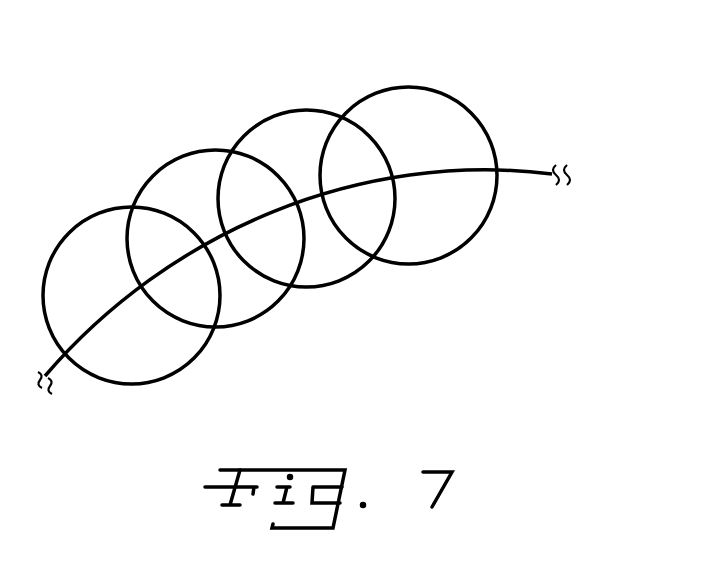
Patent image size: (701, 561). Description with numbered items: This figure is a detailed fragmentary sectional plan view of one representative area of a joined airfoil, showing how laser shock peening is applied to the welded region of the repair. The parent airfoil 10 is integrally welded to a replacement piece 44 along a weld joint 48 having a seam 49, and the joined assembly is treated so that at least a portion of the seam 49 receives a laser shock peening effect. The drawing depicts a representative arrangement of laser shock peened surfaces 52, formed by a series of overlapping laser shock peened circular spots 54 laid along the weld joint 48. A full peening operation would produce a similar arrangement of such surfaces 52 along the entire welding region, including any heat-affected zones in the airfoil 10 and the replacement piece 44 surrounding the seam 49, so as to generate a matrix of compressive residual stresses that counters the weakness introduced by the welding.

The airfoil 10 is at (317, 63).
The replacement piece 44 is at (498, 321).
The weld joint 48 is at (510, 169).
The seam 49 is at (540, 168).
The laser shock peened surfaces 52 is at (189, 352).
The laser shock peened circular spots 54 is at (365, 98).